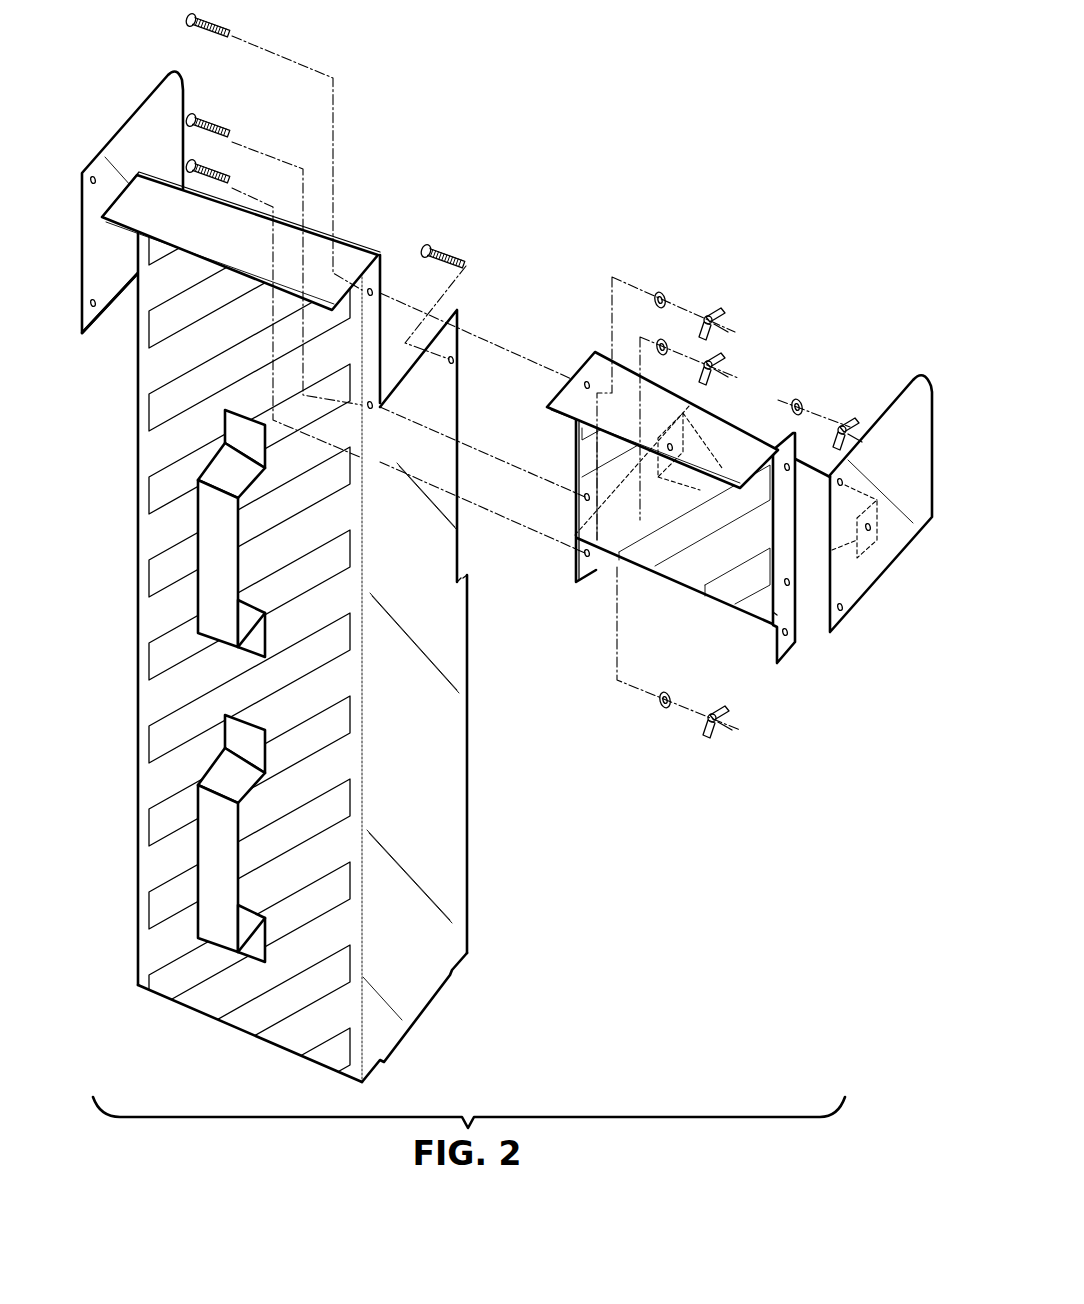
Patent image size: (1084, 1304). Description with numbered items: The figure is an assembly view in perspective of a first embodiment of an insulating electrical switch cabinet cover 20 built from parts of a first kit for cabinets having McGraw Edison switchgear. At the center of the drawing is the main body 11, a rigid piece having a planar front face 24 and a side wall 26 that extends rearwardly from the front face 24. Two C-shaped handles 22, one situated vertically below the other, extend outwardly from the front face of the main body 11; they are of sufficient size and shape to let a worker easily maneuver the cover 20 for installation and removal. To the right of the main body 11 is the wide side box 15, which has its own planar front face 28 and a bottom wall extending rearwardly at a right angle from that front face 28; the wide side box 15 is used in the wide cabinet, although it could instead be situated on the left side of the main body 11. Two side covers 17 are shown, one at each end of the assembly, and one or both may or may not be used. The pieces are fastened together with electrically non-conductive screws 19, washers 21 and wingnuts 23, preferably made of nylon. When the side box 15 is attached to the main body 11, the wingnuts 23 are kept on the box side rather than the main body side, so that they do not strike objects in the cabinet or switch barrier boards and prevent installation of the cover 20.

The main body 11 is at (342, 646).
The wide side box 15 is at (684, 511).
The side cover 17 is at (142, 128).
The screw 19 is at (448, 247).
The insulating electrical switch cabinet cover 20 is at (570, 105).
The washer 21 is at (660, 291).
The C-shaped handle 22 is at (210, 540).
The wingnut 23 is at (722, 313).
The planar front face 24 is at (208, 1003).
The side wall 26 is at (428, 985).
The planar front face 28 is at (648, 557).